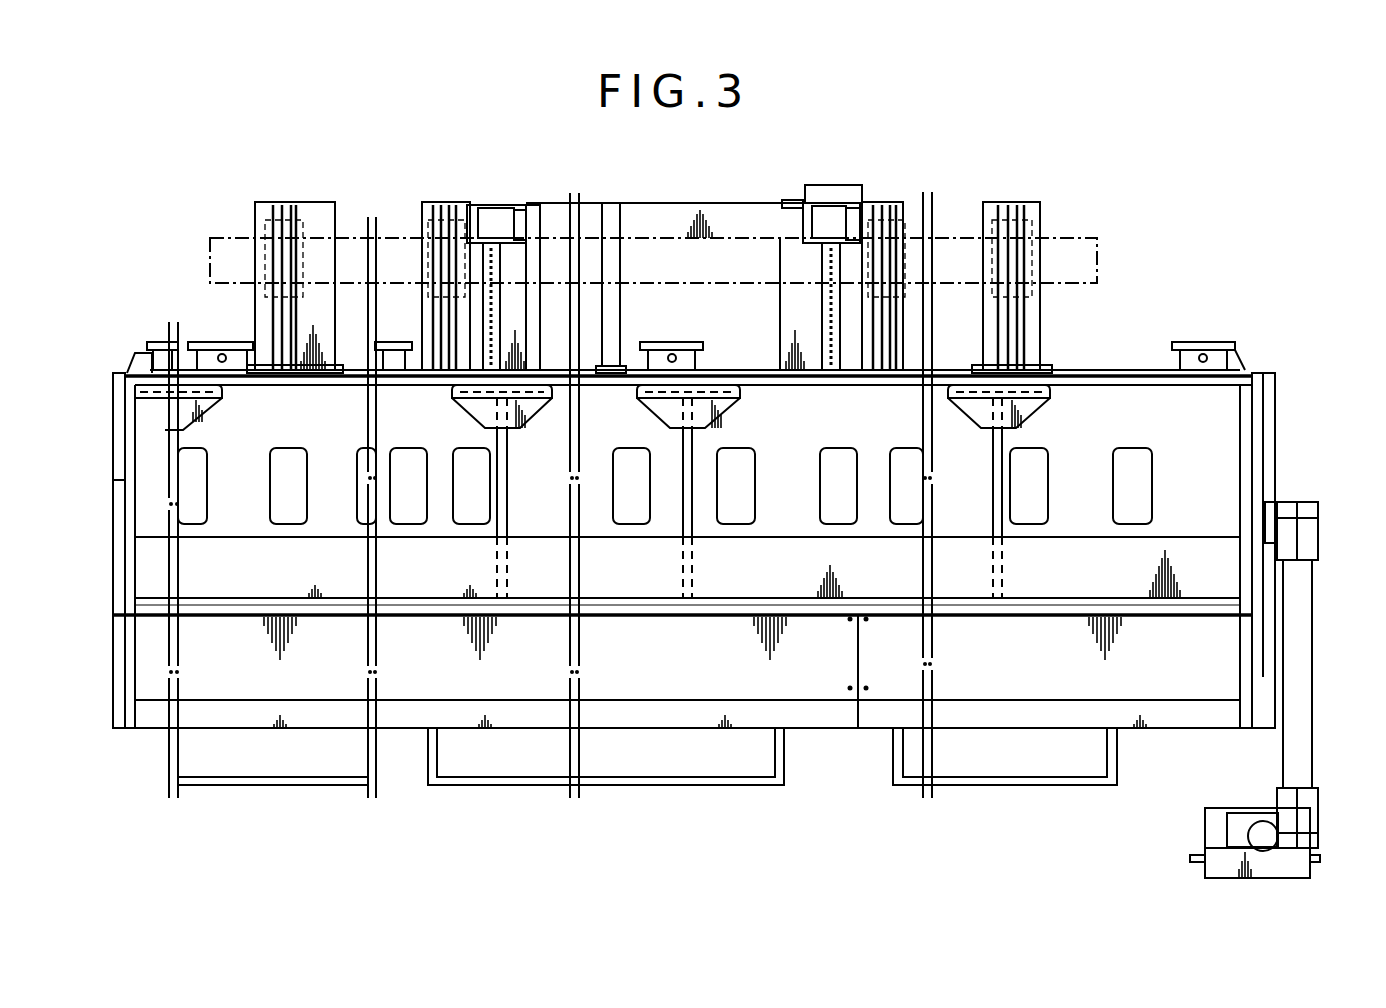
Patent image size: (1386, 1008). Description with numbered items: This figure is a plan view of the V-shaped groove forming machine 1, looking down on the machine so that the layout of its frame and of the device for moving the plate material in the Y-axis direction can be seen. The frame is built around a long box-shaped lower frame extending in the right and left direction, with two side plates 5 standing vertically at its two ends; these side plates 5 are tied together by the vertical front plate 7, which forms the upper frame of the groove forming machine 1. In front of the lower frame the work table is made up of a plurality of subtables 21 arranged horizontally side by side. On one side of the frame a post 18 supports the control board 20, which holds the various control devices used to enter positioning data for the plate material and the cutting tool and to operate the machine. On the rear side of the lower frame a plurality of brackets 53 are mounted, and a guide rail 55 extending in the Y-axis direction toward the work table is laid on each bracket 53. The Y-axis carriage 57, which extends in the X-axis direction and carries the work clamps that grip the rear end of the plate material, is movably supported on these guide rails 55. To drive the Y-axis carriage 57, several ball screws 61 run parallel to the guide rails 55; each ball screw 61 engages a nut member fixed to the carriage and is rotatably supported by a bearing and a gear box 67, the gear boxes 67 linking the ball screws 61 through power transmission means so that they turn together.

The V-shaped groove forming machine 1 is at (1163, 287).
The side plate 5 is at (1258, 492).
The front plate 7 is at (260, 605).
The post 18 is at (1305, 637).
The control board 20 is at (1300, 870).
The subtable 21 is at (332, 768).
The bracket 53 is at (333, 220).
The guide rail 55 is at (297, 220).
The Y-axis carriage 57 is at (1100, 247).
The ball screw 61 is at (498, 313).
The gear box 67 is at (500, 208).